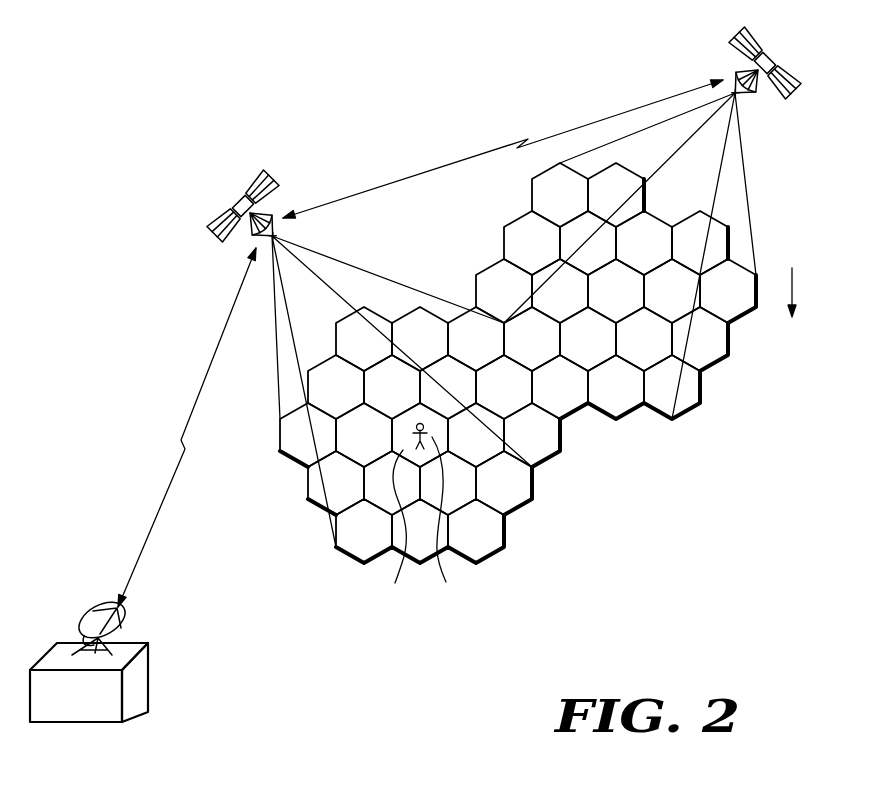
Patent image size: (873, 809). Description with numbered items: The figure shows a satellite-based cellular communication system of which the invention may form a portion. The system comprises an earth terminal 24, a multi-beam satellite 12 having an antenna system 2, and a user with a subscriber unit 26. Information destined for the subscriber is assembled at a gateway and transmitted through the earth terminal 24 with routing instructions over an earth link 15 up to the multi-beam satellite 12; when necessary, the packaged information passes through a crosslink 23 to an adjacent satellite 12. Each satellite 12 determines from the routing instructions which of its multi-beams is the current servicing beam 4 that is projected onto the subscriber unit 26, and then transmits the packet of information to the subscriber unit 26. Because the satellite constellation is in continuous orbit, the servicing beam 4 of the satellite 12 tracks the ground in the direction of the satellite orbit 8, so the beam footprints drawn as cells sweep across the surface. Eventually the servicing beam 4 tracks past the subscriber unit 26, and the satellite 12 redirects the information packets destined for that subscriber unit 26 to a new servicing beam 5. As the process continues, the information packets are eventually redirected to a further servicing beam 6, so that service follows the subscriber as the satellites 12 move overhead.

The satellite 12 is at (236, 196).
The crosslink 23 is at (438, 168).
The antenna system 2 is at (368, 270).
The satellite orbit direction 8 is at (794, 283).
The servicing beam 6 is at (428, 347).
The servicing beam 5 is at (465, 384).
The servicing beam 4 is at (393, 531).
The subscriber unit 26 is at (440, 518).
The earth link 15 is at (160, 490).
The earth terminal 24 is at (135, 697).